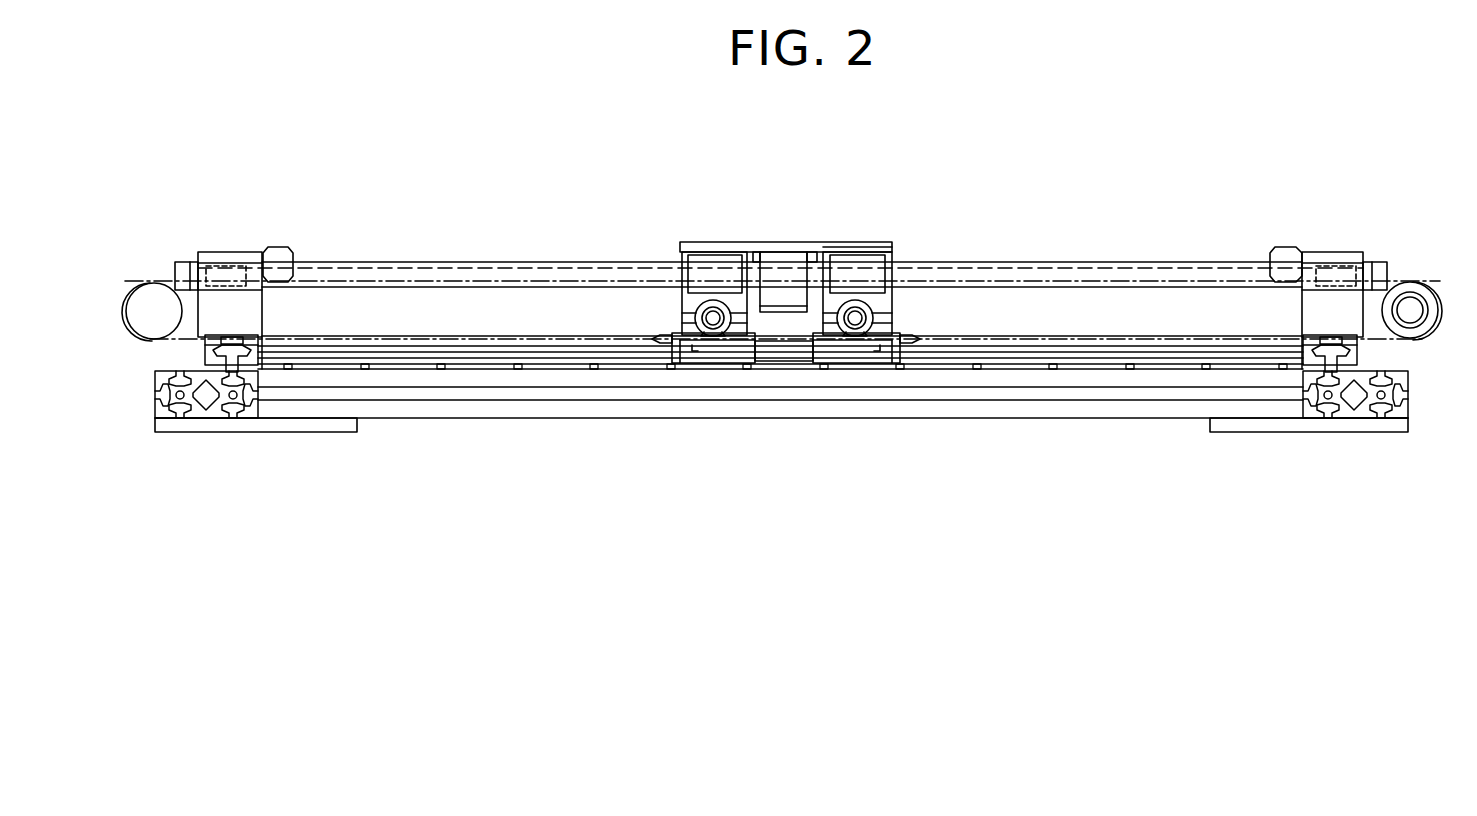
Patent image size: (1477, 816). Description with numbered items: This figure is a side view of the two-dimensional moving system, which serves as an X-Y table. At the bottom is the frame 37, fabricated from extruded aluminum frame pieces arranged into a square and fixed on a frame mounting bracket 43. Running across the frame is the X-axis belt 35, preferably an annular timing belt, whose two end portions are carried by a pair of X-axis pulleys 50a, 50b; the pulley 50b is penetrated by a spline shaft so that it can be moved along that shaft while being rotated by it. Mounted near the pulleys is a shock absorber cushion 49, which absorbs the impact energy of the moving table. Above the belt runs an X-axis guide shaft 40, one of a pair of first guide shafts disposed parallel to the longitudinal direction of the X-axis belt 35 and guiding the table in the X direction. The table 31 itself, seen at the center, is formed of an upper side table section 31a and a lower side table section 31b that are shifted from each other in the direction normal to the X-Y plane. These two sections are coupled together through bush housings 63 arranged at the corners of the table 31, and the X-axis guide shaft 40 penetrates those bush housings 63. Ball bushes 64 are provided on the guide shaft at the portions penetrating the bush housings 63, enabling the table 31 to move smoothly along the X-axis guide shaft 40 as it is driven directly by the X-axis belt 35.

The table 31 is at (807, 248).
The upper side table section 31a is at (862, 248).
The lower side table section 31b is at (793, 347).
The X-axis belt 35 is at (1053, 337).
The frame 37 is at (158, 413).
The X-axis guide shaft 40 is at (418, 270).
The frame mounting bracket 43 is at (247, 428).
The shock absorber cushion 49 is at (280, 252).
The X-axis pulley 50a is at (143, 296).
The X-axis pulley 50b is at (1420, 293).
The bush housing 63 is at (688, 302).
The ball bush 64 is at (718, 260).